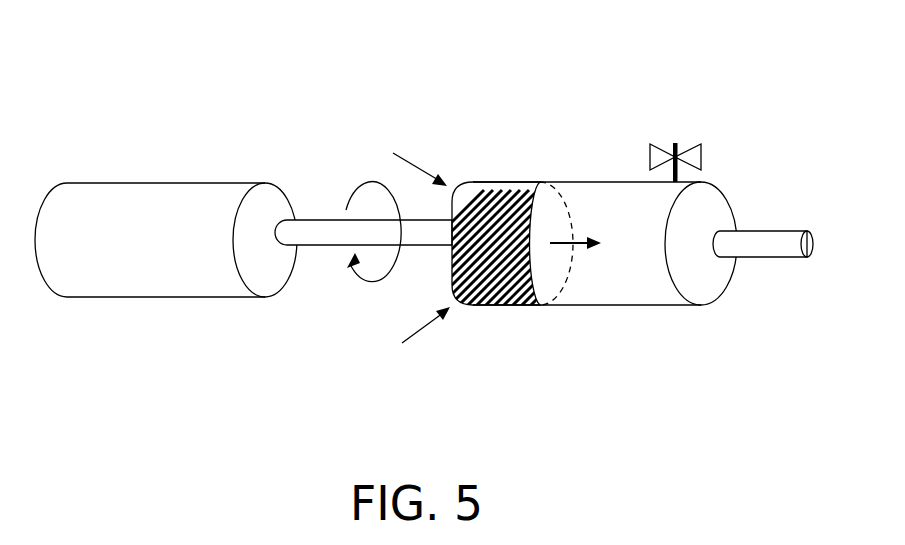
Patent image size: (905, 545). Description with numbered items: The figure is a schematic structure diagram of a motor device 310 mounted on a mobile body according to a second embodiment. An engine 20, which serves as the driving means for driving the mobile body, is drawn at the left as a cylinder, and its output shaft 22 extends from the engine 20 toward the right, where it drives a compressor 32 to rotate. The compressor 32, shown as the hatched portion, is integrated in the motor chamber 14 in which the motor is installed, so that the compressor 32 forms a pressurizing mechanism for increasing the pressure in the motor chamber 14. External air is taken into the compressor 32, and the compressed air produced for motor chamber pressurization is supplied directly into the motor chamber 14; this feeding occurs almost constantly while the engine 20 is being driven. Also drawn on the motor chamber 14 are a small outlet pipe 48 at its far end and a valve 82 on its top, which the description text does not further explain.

The motor device 310 is at (470, 104).
The engine 20 is at (87, 183).
The output shaft 22 is at (308, 246).
The motor chamber 14 is at (575, 182).
The compressor 32 is at (513, 306).
The discharge pipe 48 is at (788, 258).
The valve 82 is at (703, 152).